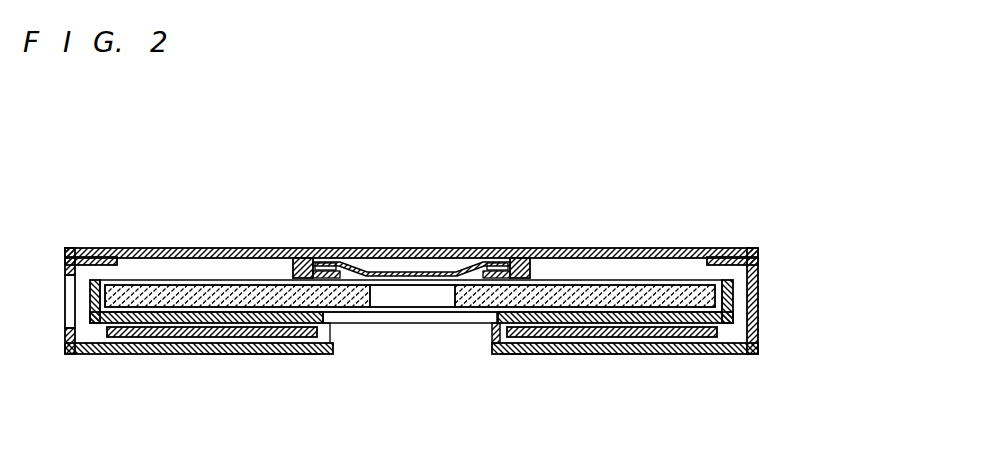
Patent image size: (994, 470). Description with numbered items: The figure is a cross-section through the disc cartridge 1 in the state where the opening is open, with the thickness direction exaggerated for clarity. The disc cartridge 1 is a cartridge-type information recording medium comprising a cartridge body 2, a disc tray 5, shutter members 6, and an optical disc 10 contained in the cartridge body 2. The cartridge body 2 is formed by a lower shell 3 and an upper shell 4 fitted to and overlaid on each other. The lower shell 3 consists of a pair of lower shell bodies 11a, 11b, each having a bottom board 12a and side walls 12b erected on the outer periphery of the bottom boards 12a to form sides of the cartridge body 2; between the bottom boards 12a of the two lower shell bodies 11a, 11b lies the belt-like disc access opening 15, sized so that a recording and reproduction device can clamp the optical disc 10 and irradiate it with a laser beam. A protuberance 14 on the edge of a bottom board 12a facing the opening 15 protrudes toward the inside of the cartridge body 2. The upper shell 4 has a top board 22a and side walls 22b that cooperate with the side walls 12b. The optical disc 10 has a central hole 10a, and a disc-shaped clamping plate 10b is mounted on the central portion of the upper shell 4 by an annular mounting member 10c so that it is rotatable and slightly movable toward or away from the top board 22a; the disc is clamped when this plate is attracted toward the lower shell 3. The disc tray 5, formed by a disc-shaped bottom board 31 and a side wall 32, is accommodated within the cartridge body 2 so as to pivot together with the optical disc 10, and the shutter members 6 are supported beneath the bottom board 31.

The disc cartridge 1 is at (416, 157).
The cartridge body 2 is at (666, 212).
The lower shell 3 is at (118, 355).
The upper shell 4 is at (182, 248).
The disc tray 5 is at (78, 298).
The shutter member 6 is at (333, 328).
The optical disc 10 is at (480, 291).
The central hole 10a is at (411, 290).
The clamping plate 10b is at (348, 247).
The annular mounting member 10c is at (302, 252).
The lower shell body 11a is at (263, 364).
The lower shell body 11b is at (553, 364).
The bottom board 12a is at (222, 355).
The side wall 12b is at (758, 327).
The protuberance 14 is at (495, 333).
The disc access opening 15 is at (392, 340).
The top board 22a is at (403, 247).
The side wall 22b is at (758, 273).
The bottom board 31 is at (217, 312).
The side wall 32 is at (733, 303).